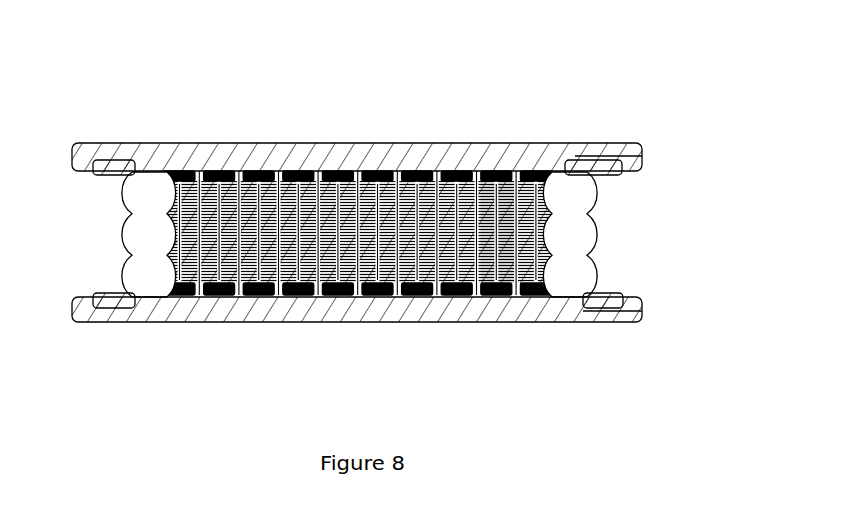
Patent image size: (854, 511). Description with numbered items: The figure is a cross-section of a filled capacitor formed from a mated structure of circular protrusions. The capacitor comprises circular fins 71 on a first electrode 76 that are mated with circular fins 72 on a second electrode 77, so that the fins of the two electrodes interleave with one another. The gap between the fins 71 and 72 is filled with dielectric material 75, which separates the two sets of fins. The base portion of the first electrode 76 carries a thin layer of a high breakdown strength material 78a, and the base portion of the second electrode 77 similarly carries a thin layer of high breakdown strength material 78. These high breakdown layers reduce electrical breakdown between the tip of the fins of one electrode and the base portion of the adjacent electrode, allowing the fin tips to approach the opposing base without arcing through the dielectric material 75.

The circular fins 71 is at (200, 193).
The circular fins 72 is at (497, 243).
The dielectric material 75 is at (250, 193).
The first electrode 76 is at (458, 159).
The second electrode 77 is at (413, 308).
The high breakdown strength material 78 is at (265, 293).
The high breakdown strength material 78a is at (318, 172).